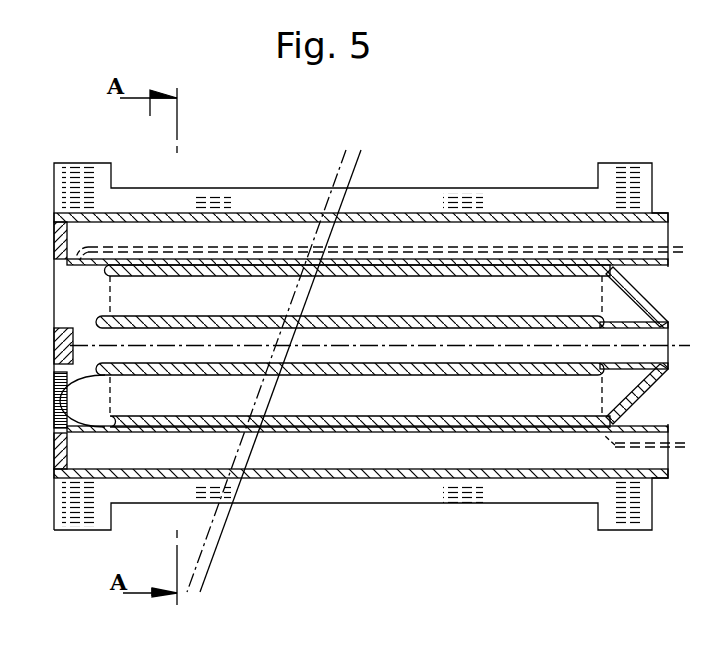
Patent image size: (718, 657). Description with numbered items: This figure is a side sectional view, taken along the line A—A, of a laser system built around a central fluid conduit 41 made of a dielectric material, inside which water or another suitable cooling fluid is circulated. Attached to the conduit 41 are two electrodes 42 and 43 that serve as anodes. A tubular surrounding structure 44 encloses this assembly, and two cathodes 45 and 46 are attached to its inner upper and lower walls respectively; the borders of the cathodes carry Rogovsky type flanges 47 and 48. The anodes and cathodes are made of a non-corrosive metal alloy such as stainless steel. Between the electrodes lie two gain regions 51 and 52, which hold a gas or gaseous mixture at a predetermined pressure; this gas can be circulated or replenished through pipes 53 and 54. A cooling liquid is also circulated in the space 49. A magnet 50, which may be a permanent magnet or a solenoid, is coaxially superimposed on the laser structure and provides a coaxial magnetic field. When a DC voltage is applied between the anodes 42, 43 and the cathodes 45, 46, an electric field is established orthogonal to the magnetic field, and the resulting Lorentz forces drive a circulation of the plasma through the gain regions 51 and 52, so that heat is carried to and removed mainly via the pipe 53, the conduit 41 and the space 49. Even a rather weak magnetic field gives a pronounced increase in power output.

The central fluid conduit 41 is at (660, 353).
The electrode 42 is at (184, 290).
The electrode 43 is at (150, 376).
The tubular surrounding structure 44 is at (439, 433).
The cathode 45 is at (413, 419).
The cathode 46 is at (588, 278).
The Rogovsky type flange 47 is at (110, 268).
The Rogovsky type flange 48 is at (105, 315).
The space 49 is at (350, 408).
The magnet 50 is at (271, 197).
The gain region 51 is at (150, 311).
The gain region 52 is at (542, 414).
The pipe 53 is at (623, 445).
The pipe 54 is at (499, 230).